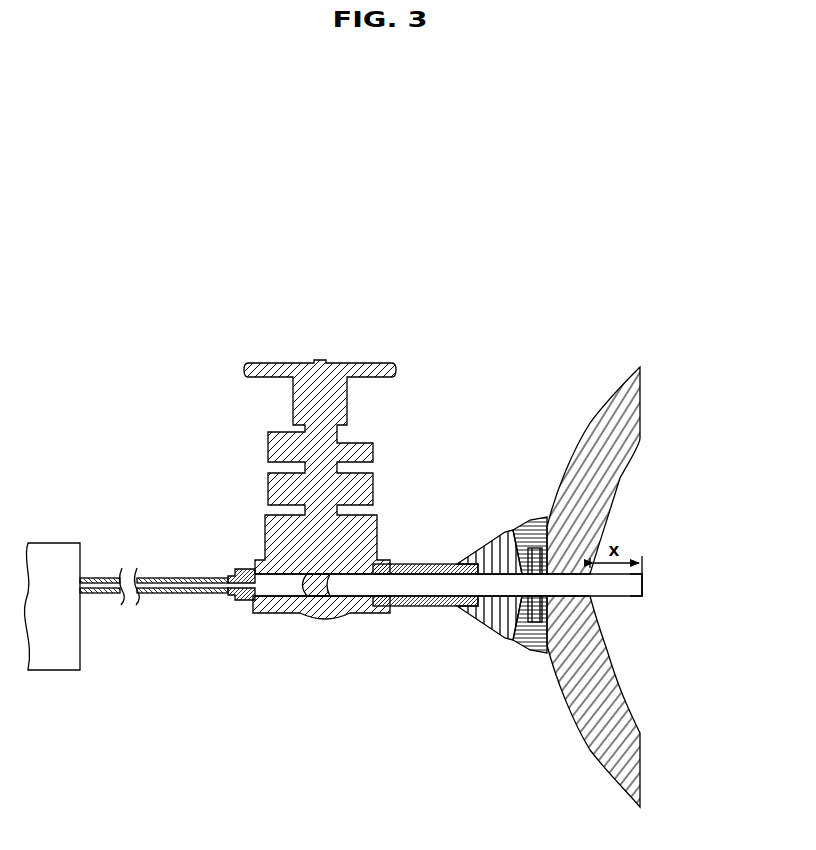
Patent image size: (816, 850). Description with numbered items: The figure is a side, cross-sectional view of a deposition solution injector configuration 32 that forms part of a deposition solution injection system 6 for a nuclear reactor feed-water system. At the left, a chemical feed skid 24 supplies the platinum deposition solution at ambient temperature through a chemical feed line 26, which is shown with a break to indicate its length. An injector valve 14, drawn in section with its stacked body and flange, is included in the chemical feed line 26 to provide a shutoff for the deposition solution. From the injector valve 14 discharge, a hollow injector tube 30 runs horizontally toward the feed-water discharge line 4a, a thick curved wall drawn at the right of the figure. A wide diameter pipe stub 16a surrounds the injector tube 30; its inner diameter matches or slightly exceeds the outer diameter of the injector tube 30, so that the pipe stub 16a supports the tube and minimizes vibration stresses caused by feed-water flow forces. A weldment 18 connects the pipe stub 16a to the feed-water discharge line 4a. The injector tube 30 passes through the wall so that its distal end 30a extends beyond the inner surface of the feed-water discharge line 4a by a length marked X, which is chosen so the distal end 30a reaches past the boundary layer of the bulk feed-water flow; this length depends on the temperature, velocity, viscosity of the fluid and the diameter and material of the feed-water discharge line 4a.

The injector valve 14 is at (306, 513).
The feed-water discharge line 4a is at (600, 384).
The weldment 18 is at (509, 518).
The wide diameter pipe stub 16a is at (427, 560).
The hollow injector tube 30 is at (556, 597).
The distal end 30a is at (643, 599).
The deposition solution injection system 6 is at (655, 582).
The chemical feed skid 24 is at (68, 672).
The chemical feed line 26 is at (98, 578).
The deposition solution injector configuration 32 is at (303, 642).